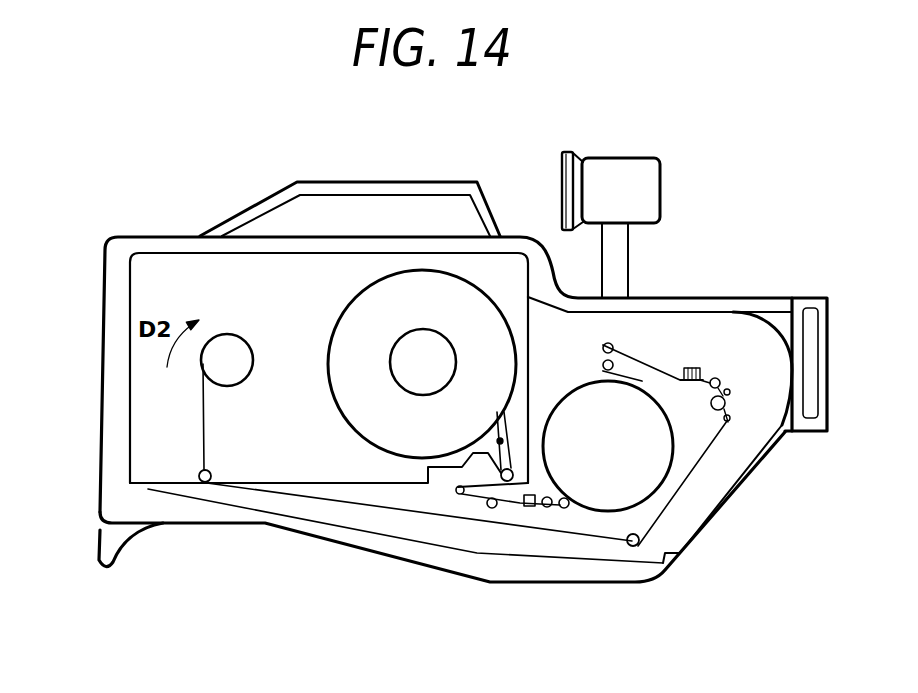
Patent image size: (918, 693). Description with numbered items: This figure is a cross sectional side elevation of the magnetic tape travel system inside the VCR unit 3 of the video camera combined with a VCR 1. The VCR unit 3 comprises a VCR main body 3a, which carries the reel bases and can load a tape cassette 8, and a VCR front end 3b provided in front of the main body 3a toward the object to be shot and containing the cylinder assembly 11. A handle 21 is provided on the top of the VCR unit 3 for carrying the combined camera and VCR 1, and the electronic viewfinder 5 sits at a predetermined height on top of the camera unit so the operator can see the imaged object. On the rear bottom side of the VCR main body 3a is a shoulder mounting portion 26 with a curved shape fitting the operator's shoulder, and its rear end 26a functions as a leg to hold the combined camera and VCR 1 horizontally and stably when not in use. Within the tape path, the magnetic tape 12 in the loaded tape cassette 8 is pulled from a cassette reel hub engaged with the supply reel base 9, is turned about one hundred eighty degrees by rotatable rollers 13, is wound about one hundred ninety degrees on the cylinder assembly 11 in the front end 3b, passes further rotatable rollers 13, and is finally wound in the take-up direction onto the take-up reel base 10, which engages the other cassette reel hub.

The video camera combined with a VCR 1 is at (102, 214).
The VCR unit 3 is at (158, 243).
The VCR main body 3a is at (143, 440).
The VCR front end 3b is at (713, 467).
The electronic viewfinder 5 is at (638, 172).
The tape cassette 8 is at (513, 258).
The supply reel base 9 is at (420, 352).
The take-up reel base 10 is at (233, 350).
The cylinder assembly 11 is at (655, 477).
The magnetic tape 12 is at (650, 362).
The rotatable rollers 13 is at (205, 482).
The handle 21 is at (315, 182).
The shoulder mounting portion 26 is at (254, 527).
The rear end of the shoulder mounting portion 26a is at (108, 572).